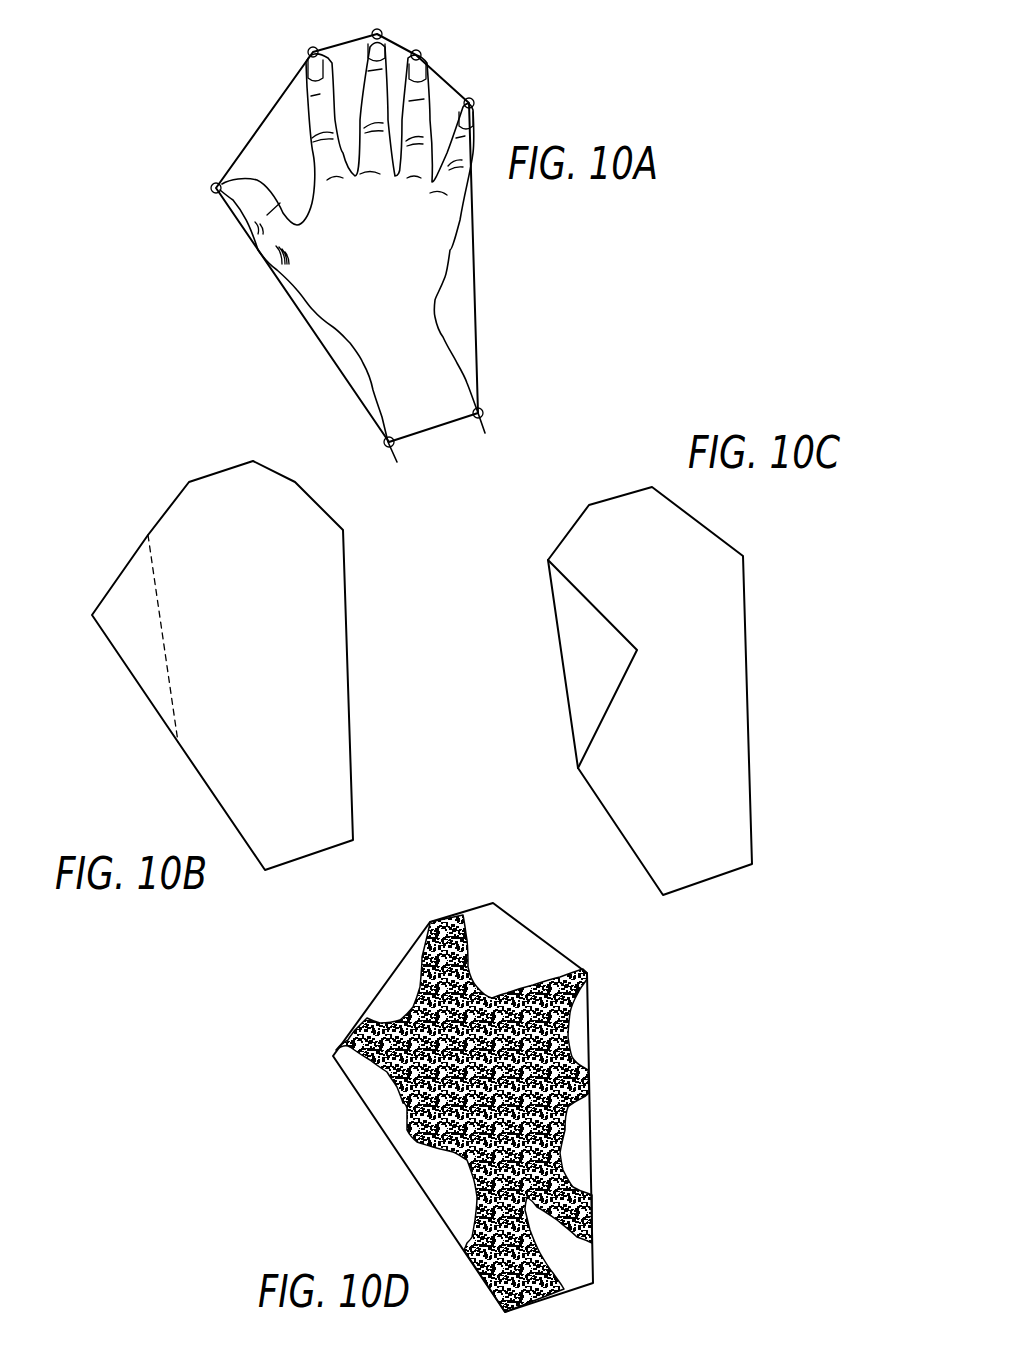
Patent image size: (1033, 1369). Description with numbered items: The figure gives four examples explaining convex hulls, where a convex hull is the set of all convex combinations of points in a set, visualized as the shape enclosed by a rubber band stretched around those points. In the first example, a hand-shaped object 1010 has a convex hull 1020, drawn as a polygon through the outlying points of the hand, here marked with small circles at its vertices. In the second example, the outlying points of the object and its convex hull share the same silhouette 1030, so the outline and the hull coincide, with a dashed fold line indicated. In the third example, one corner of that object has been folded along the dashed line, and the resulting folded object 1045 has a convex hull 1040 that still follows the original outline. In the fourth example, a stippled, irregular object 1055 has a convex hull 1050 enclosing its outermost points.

In FIG. 10A, the object 1010 is at (417, 350).
In FIG. 10A, the convex hull 1020 is at (474, 272).
In FIG. 10B, the silhouette 1030 is at (148, 535).
In FIG. 10C, the convex hull 1040 is at (747, 632).
In FIG. 10C, the object 1045 is at (615, 623).
In FIG. 10D, the convex hull 1050 is at (591, 1145).
In FIG. 10D, the object 1055 is at (524, 983).